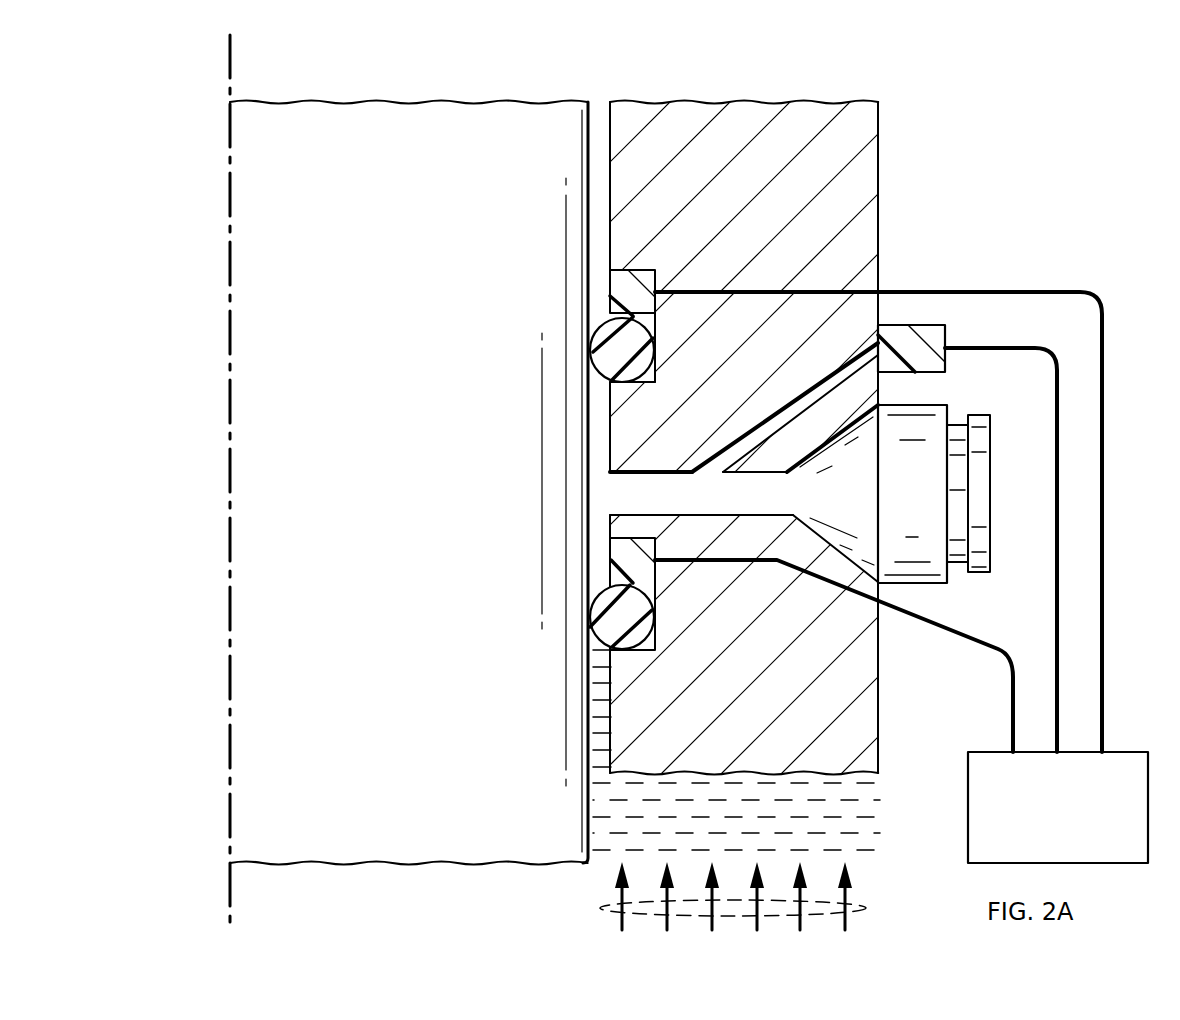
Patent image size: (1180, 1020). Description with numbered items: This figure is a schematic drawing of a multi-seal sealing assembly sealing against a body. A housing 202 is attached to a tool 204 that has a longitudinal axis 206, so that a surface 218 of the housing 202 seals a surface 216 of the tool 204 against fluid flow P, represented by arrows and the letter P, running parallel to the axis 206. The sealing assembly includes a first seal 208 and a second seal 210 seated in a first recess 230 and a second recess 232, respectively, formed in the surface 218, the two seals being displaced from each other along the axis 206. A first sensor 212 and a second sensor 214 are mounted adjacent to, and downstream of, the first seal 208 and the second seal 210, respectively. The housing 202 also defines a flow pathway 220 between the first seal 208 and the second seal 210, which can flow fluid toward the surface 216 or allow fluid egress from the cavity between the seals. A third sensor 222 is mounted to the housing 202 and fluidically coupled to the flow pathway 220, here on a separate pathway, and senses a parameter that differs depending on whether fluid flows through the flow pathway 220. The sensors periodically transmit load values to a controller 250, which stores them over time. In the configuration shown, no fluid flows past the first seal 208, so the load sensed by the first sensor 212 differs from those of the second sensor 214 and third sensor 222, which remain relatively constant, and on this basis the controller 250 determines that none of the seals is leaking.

The housing 202 is at (820, 102).
The tool 204 is at (358, 102).
The axis 206 is at (229, 54).
The first seal 208 is at (642, 630).
The second seal 210 is at (642, 363).
The first sensor 212 is at (647, 577).
The second sensor 214 is at (643, 272).
The surface 216 is at (597, 103).
The surface 218 is at (605, 125).
The flow pathway 220 is at (870, 547).
The third sensor 222 is at (937, 338).
The first recess 230 is at (652, 643).
The second recess 232 is at (650, 322).
The controller 250 is at (1037, 824).
The fluid flow P is at (866, 918).